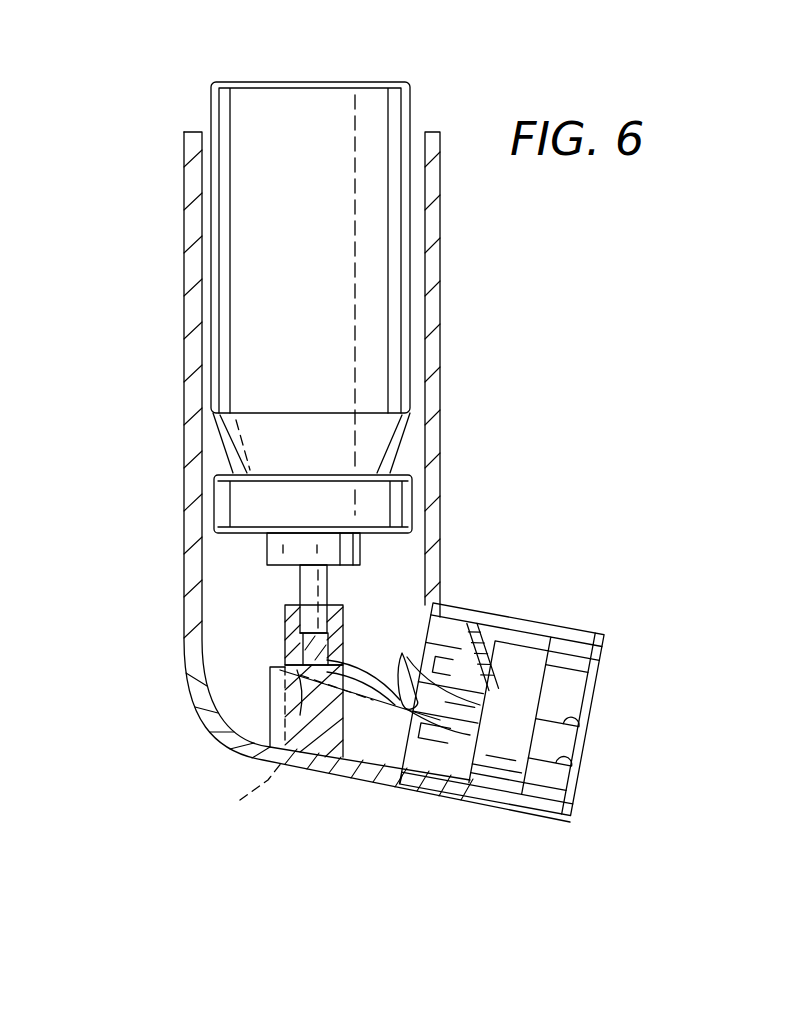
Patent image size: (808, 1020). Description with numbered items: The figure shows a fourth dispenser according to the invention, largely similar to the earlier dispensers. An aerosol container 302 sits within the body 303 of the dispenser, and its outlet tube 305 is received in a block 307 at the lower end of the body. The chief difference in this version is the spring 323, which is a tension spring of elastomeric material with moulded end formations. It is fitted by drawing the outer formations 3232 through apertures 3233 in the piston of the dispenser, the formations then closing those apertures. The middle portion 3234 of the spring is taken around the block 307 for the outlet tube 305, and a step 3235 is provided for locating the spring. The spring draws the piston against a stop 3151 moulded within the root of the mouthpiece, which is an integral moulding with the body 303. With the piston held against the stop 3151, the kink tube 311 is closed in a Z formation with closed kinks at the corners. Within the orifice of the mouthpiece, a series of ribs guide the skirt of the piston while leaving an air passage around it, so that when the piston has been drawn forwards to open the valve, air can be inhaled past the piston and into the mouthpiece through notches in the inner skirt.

The aerosol container 302 is at (375, 296).
The body 303 is at (433, 382).
The outlet tube 305 is at (310, 583).
The block 307 is at (315, 720).
The kink tube 311 is at (366, 665).
The spring 323 is at (376, 710).
The outer end formation 3232 is at (488, 692).
The aperture 3233 is at (463, 740).
The middle portion 3234 is at (229, 746).
The step 3235 is at (275, 665).
The stop 3151 is at (397, 773).